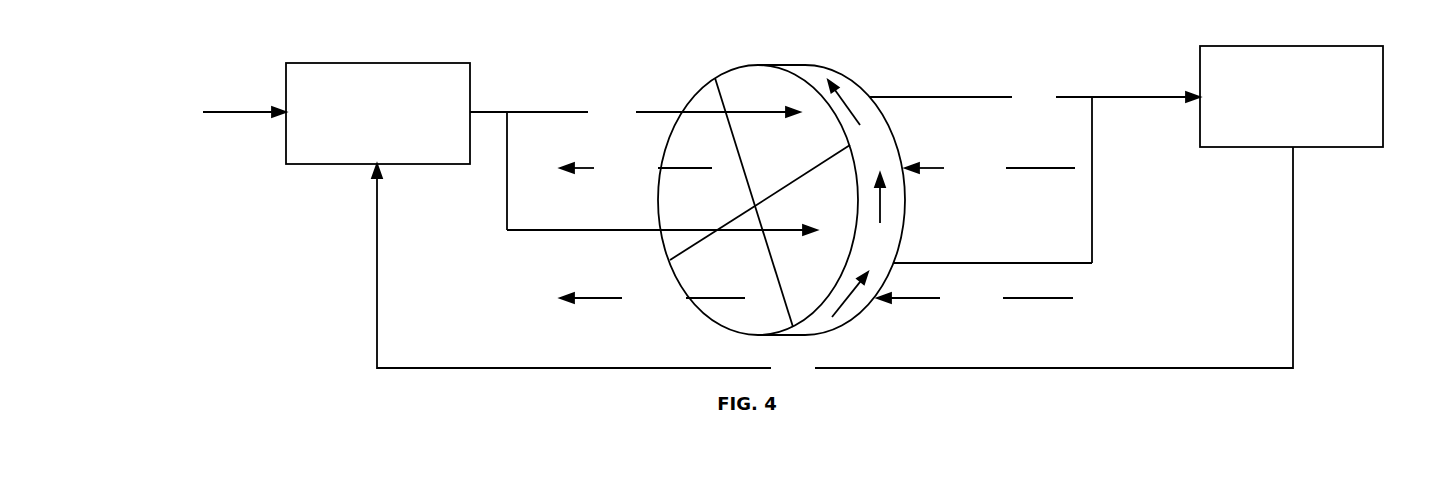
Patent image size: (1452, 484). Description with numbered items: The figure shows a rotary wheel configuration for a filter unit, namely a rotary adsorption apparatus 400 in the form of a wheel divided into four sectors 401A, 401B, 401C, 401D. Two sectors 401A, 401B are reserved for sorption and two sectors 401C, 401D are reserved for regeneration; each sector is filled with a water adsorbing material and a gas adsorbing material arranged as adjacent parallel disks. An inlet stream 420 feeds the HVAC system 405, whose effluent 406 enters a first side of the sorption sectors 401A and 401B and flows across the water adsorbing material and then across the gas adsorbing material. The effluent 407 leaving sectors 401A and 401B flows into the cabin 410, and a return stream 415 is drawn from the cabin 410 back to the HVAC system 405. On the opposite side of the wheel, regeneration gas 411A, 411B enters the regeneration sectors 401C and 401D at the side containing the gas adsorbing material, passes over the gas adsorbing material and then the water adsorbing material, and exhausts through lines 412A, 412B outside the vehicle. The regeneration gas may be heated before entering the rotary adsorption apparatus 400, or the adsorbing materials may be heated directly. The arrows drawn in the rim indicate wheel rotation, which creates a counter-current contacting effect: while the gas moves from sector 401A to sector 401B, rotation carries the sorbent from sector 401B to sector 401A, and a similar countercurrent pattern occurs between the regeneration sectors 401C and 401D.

The rotary adsorption apparatus 400 is at (686, 53).
The sorption sector 401A is at (761, 142).
The sorption sector 401B is at (802, 178).
The regeneration sector 401C is at (753, 266).
The regeneration sector 401D is at (712, 225).
The HVAC system 405 is at (378, 113).
The effluent 406 is at (643, 169).
The effluent 407 is at (1035, 174).
The cabin 410 is at (1291, 96).
The regeneration gas 411A is at (990, 168).
The regeneration gas 411B is at (975, 298).
The exhaust line 412A is at (636, 168).
The exhaust line 412B is at (652, 298).
The return stream 415 is at (832, 264).
The input stream 420 is at (238, 111).